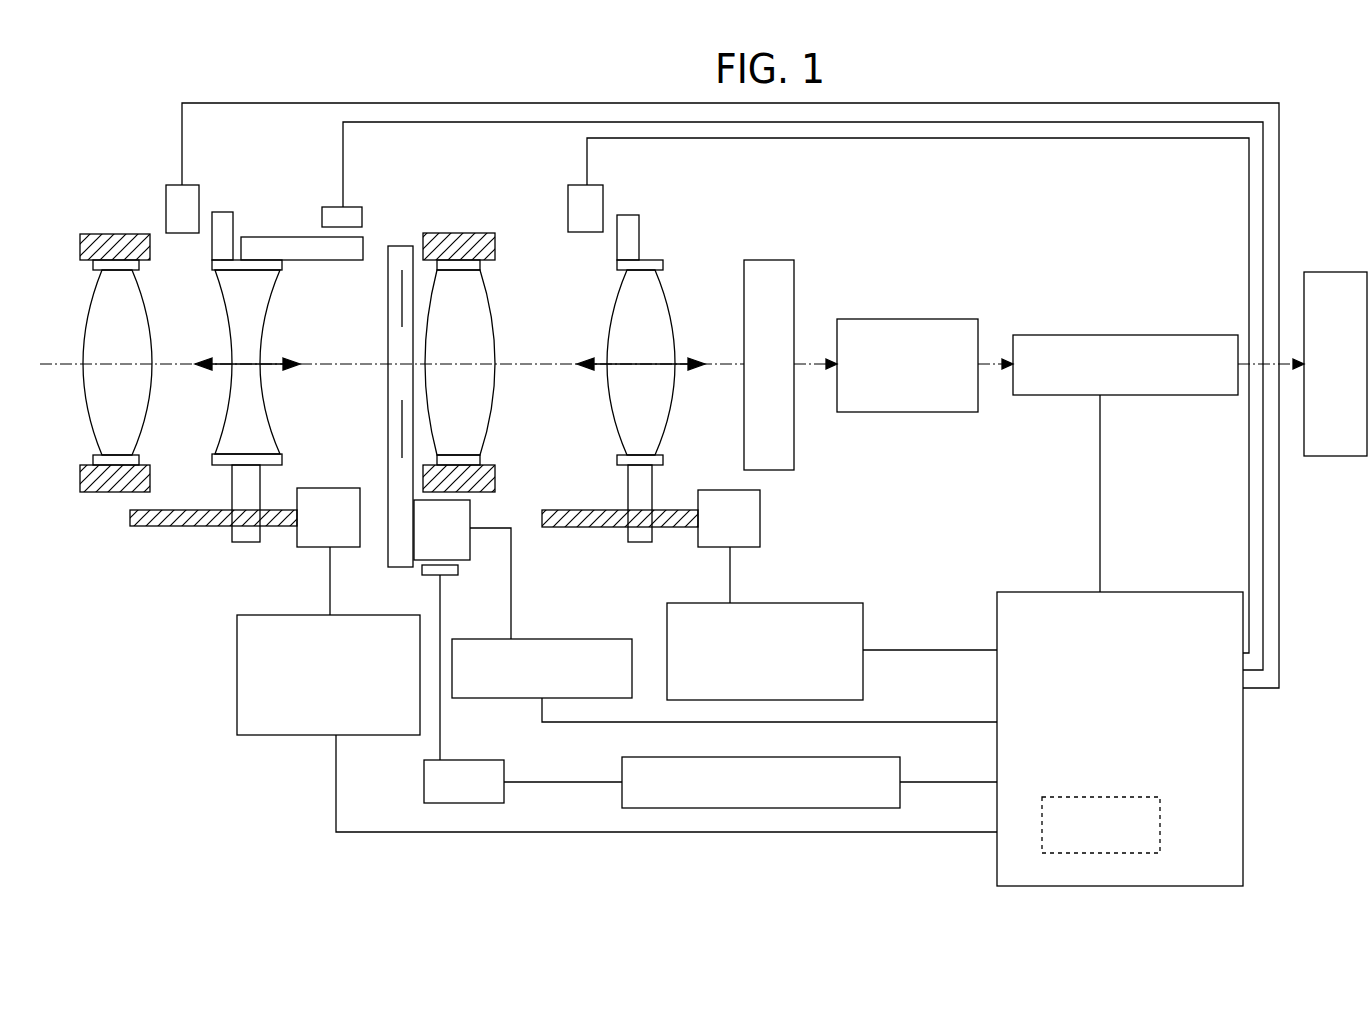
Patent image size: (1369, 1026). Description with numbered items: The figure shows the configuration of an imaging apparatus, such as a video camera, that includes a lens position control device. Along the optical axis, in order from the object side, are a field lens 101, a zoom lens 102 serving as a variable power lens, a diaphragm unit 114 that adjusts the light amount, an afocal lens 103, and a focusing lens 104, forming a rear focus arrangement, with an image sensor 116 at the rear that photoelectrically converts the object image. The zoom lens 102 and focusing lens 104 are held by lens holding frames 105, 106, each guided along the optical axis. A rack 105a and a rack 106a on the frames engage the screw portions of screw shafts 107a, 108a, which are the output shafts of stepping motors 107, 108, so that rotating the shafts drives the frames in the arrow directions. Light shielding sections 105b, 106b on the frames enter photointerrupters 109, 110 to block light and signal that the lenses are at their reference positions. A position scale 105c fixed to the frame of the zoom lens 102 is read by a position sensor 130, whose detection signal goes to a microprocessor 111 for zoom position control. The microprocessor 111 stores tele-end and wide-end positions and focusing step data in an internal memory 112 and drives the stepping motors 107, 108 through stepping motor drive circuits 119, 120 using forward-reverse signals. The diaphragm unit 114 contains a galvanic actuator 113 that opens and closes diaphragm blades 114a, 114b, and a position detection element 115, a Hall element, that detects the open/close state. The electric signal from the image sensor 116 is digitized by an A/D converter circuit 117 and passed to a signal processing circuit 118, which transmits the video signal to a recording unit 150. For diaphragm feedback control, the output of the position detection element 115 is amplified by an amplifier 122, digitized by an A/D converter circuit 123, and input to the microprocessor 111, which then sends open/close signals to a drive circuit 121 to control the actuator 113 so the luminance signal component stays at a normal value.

The field lens 101 is at (86, 320).
The zoom lens 102 is at (228, 412).
The afocal lens 103 is at (486, 288).
The focusing lens 104 is at (672, 288).
The lens holding frame 105 is at (216, 268).
The rack 105a is at (248, 542).
The light shielding section 105b is at (222, 212).
The position scale 105c is at (306, 260).
The lens holding frame 106 is at (618, 266).
The rack 106a is at (640, 540).
The light shielding section 106b is at (638, 230).
The stepping motor 107 is at (321, 488).
The screw shaft 107a is at (146, 526).
The stepping motor 108 is at (760, 518).
The screw shaft 108a is at (566, 526).
The photointerrupter 109 is at (166, 202).
The photointerrupter 110 is at (567, 202).
The microprocessor 111 is at (1170, 592).
The internal memory 112 is at (1160, 826).
The galvanic actuator 113 is at (470, 518).
The diaphragm unit 114 is at (390, 246).
The diaphragm blade 114a is at (402, 320).
The diaphragm blade 114b is at (402, 418).
The position detection element 115 is at (424, 572).
The image sensor 116 is at (770, 260).
The A/D converter circuit 117 is at (896, 319).
The signal processing circuit 118 is at (1118, 335).
The stepping motor drive circuit 119 is at (286, 738).
The stepping motor drive circuit 120 is at (868, 594).
The drive circuit 121 is at (509, 698).
The amplifier 122 is at (424, 777).
The A/D converter circuit 123 is at (896, 762).
The position sensor 130 is at (322, 212).
The recording unit 150 is at (1334, 272).